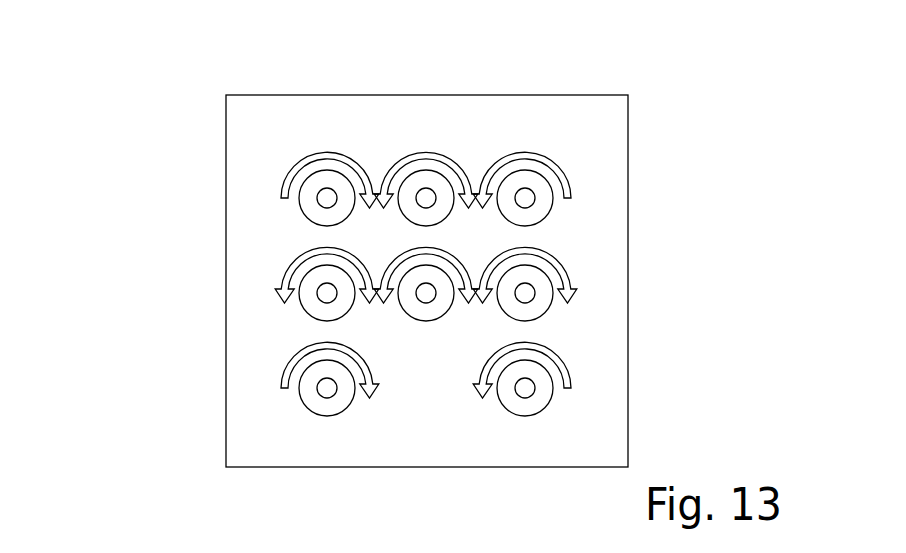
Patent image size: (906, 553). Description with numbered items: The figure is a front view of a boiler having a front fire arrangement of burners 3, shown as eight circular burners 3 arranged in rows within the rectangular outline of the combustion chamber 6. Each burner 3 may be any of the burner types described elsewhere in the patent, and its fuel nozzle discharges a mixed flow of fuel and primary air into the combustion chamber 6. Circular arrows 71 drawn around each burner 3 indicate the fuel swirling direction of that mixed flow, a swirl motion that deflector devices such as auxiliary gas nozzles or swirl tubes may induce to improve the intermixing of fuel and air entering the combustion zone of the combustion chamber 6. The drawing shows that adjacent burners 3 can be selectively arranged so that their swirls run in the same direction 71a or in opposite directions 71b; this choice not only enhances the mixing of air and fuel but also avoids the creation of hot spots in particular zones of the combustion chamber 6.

The burner 3 is at (470, 160).
The combustion chamber 6 is at (432, 362).
The circular arrows 71 is at (297, 151).
The same swirl direction 71a is at (388, 186).
The opposite swirl direction 71b is at (458, 246).